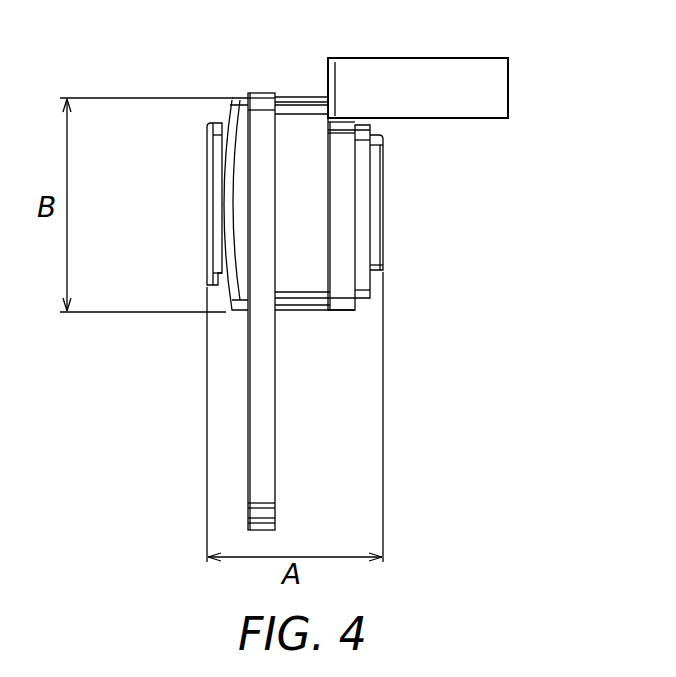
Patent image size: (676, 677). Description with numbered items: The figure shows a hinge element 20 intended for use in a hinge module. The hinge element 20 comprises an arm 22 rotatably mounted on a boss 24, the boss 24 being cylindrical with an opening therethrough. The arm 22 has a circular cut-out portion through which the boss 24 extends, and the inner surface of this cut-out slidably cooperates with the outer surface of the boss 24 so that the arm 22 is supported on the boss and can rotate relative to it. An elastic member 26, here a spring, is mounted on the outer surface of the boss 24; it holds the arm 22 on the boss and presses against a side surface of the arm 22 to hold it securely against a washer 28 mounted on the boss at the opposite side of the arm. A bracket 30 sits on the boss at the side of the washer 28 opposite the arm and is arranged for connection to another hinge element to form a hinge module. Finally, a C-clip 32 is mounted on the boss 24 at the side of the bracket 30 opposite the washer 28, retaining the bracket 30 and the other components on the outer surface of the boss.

The hinge element 20 is at (157, 90).
The arm 22 is at (262, 487).
The boss 24 is at (215, 258).
The elastic member 26 is at (240, 97).
The washer 28 is at (310, 97).
The bracket 30 is at (345, 210).
The C-clip 32 is at (365, 290).